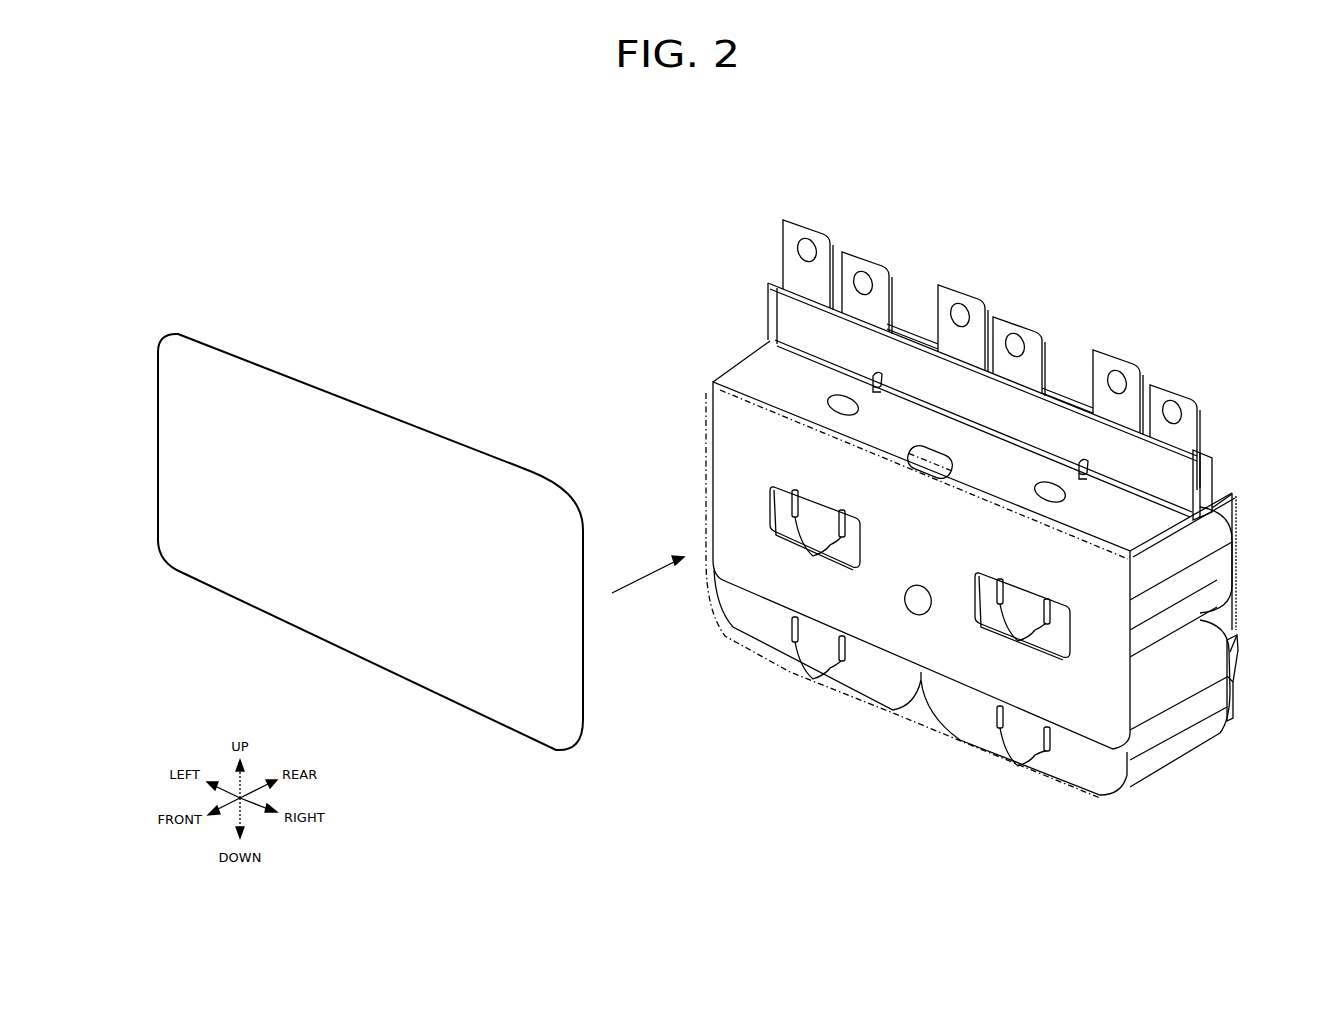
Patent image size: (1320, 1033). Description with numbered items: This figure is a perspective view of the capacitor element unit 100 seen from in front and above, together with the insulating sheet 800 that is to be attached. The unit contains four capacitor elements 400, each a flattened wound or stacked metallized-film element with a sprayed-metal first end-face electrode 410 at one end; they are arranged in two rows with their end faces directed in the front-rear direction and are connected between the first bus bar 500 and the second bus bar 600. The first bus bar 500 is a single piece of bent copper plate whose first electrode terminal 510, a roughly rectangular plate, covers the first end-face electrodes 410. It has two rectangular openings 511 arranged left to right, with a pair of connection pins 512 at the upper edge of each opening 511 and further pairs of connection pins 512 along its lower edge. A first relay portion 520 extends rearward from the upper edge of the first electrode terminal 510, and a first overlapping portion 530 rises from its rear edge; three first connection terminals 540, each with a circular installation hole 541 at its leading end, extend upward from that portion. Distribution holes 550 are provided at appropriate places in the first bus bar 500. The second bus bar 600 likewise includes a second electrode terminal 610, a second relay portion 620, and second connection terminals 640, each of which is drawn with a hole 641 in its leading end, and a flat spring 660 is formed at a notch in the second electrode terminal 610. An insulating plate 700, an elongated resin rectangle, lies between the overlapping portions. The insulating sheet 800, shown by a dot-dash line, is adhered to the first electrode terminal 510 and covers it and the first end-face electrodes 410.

The capacitor element unit 100 is at (1147, 253).
The capacitor element 400 is at (1218, 572).
The first end-face electrode 410 is at (780, 523).
The first bus bar 500 is at (702, 418).
The first electrode terminal 510 is at (728, 495).
The opening 511 is at (812, 512).
The connection pin 512 is at (805, 545).
The first relay portion 520 is at (752, 365).
The first overlapping portion 530 is at (793, 320).
The first connection terminal 540 is at (862, 263).
The installation hole 541 is at (861, 303).
The distribution hole 550 is at (838, 400).
The second bus bar 600 is at (1237, 520).
The second electrode terminal 610 is at (1222, 575).
The second relay portion 620 is at (1210, 470).
The second connection terminal 640 is at (805, 230).
The terminal hole 641 is at (795, 251).
The flat spring 660 is at (1240, 662).
The insulating plate 700 is at (1055, 393).
The insulating sheet 800 is at (362, 403).